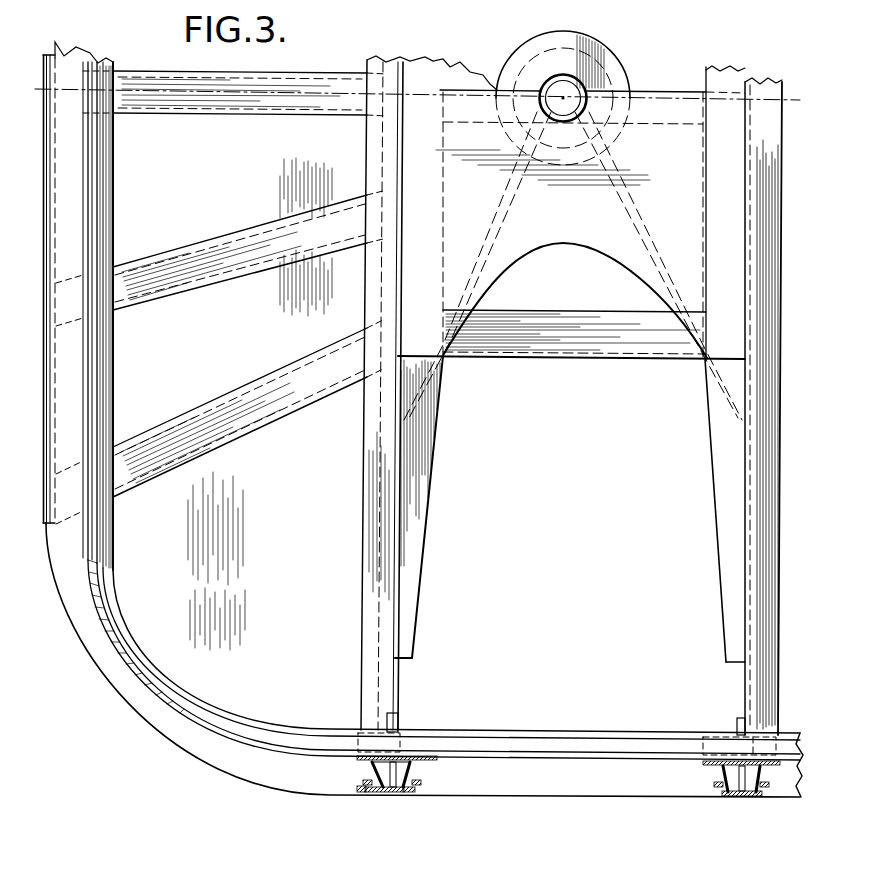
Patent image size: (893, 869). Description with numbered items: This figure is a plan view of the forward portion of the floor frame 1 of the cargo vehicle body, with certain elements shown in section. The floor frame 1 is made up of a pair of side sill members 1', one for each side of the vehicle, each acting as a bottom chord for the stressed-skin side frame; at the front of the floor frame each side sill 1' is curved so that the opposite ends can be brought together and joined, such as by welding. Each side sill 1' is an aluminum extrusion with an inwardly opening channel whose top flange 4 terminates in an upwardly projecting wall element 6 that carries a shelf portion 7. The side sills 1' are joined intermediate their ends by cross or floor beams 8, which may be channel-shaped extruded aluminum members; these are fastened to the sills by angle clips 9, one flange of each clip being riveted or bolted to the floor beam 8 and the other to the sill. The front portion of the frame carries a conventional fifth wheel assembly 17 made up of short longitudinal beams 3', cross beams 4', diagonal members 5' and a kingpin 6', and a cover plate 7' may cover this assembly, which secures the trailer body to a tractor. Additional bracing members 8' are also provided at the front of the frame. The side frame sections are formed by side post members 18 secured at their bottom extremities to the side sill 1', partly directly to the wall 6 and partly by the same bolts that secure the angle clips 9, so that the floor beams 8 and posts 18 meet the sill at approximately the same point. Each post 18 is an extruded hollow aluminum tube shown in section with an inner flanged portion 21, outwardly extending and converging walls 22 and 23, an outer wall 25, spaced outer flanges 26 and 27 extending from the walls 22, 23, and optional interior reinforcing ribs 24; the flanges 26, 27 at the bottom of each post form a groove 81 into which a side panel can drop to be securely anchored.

The floor frame 1 is at (453, 699).
The side sill member 1' is at (421, 430).
The short longitudinal beam 3' is at (414, 232).
The top flange 4 is at (417, 92).
The cross beam 4' is at (570, 509).
The diagonal member 5' is at (573, 266).
The wall element 6 is at (79, 312).
The kingpin 6' is at (569, 98).
The shelf portion 7 is at (121, 316).
The cover plate 7' is at (587, 198).
The floor beam 8 is at (548, 397).
The bracing member 8' is at (219, 382).
The angle clip 9 is at (377, 720).
The fifth wheel assembly 17 is at (557, 372).
The side post member 18 is at (430, 754).
The inner flanged portion 21 is at (430, 760).
The converging wall 22 is at (372, 768).
The converging wall 23 is at (413, 783).
The reinforcing rib 24 is at (393, 788).
The outer wall 25 is at (404, 793).
The outer flange 26 is at (362, 781).
The outer flange 27 is at (369, 793).
The groove 81 is at (358, 789).